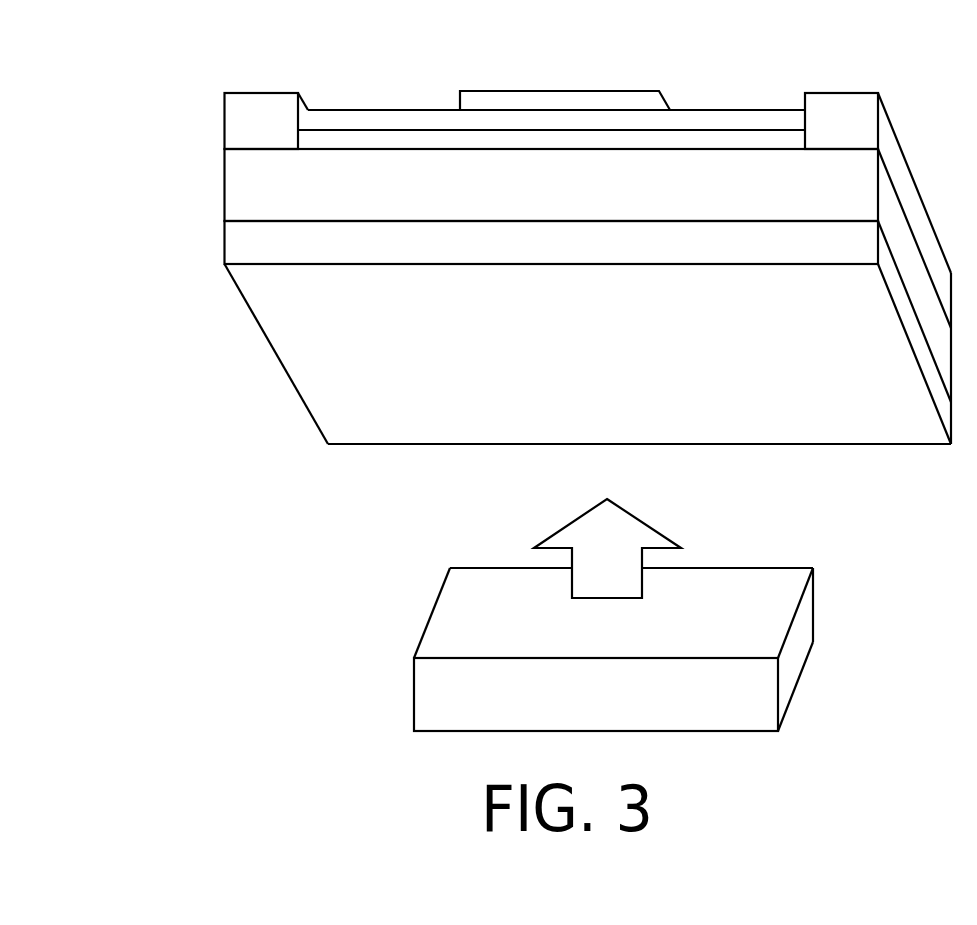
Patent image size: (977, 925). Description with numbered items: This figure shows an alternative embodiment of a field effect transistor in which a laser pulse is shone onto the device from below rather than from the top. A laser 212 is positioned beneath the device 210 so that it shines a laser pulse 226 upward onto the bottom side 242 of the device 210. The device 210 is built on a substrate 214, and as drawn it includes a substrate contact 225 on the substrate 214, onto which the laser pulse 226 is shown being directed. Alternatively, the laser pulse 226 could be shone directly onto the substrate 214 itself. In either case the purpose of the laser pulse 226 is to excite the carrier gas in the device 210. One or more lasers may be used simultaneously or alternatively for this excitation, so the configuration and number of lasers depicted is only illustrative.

The device 210 is at (145, 104).
The substrate 214 is at (533, 196).
The substrate contact 225 is at (572, 256).
The laser 212 is at (582, 706).
The laser pulse 226 is at (586, 576).
The bottom side 242 is at (356, 514).